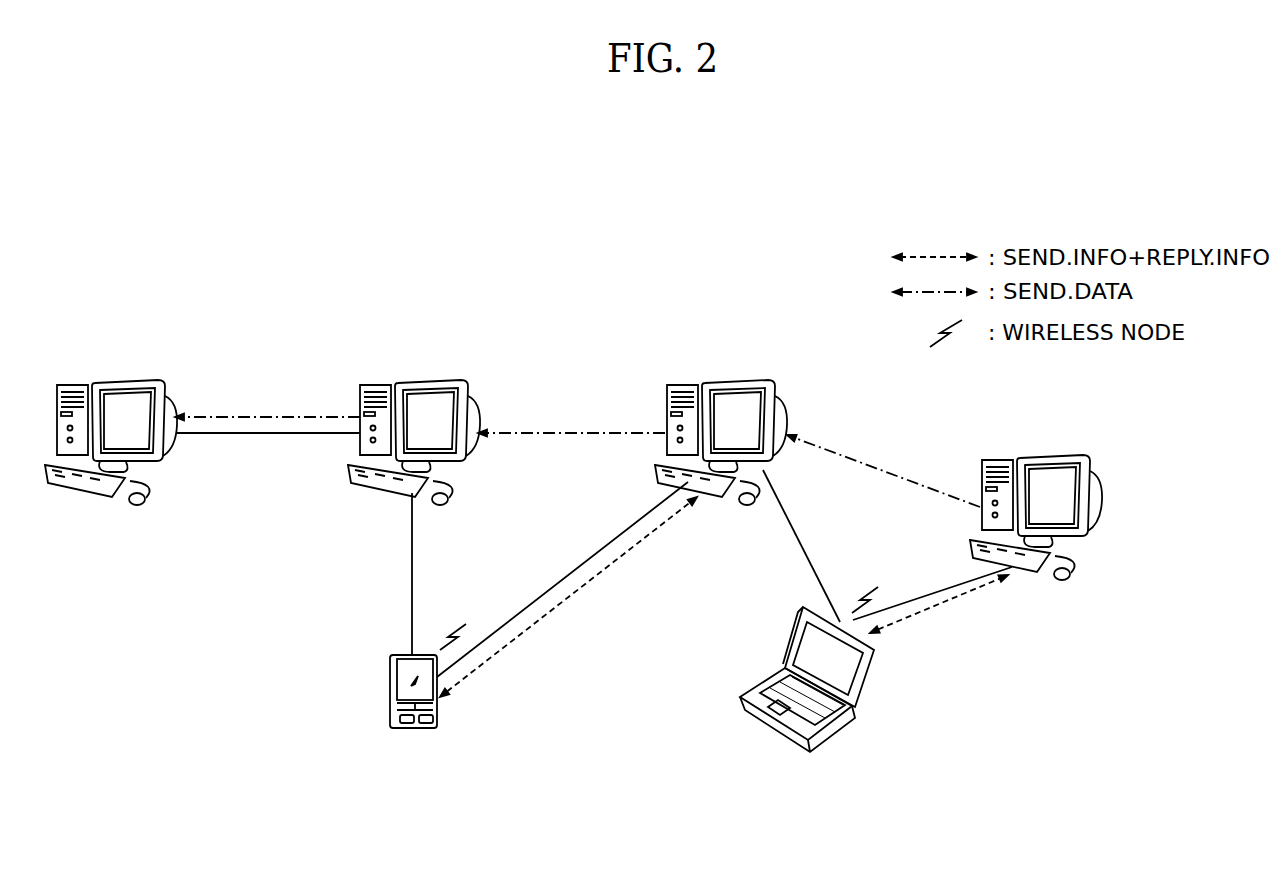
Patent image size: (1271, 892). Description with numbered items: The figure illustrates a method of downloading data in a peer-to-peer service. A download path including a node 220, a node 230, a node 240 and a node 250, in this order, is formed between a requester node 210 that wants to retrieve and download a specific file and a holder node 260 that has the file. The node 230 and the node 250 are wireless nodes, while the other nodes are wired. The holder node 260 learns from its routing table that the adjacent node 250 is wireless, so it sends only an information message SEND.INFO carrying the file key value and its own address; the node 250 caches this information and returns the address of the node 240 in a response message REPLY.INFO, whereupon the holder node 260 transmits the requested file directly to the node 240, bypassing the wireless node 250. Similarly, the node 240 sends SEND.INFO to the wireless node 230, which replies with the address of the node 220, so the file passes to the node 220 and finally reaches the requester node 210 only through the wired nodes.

The requester node 210 is at (131, 381).
The node 220 is at (434, 381).
The node 230 is at (389, 690).
The node 240 is at (738, 381).
The node 250 is at (790, 638).
The holder node 260 is at (1053, 457).